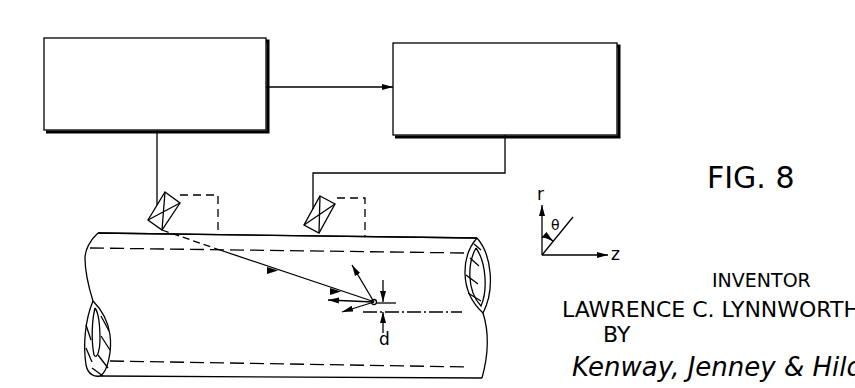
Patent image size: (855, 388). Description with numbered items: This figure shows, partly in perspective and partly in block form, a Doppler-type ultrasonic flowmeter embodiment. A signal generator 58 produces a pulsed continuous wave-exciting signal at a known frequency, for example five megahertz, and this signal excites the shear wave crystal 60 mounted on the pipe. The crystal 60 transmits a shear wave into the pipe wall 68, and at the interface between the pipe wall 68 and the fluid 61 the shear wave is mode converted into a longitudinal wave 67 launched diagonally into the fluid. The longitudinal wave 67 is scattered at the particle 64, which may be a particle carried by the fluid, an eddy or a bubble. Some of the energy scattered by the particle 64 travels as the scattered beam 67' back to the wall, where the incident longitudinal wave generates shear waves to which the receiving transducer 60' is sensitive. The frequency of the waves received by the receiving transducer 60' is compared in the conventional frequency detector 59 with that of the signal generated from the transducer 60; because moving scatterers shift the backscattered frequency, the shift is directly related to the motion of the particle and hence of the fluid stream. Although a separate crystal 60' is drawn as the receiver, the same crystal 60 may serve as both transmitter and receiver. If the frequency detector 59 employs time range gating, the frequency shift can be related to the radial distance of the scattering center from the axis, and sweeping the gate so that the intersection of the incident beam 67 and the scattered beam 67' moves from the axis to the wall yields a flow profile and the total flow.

The signal generator 58 is at (267, 58).
The frequency detector 59 is at (618, 68).
The shear wave crystal 60 is at (168, 213).
The receiving transducer 60' is at (321, 215).
The fluid 61 is at (104, 270).
The particle 64 is at (379, 298).
The longitudinal wave 67 is at (267, 265).
The scattered beam 67' is at (369, 284).
The pipe wall 68 is at (433, 215).